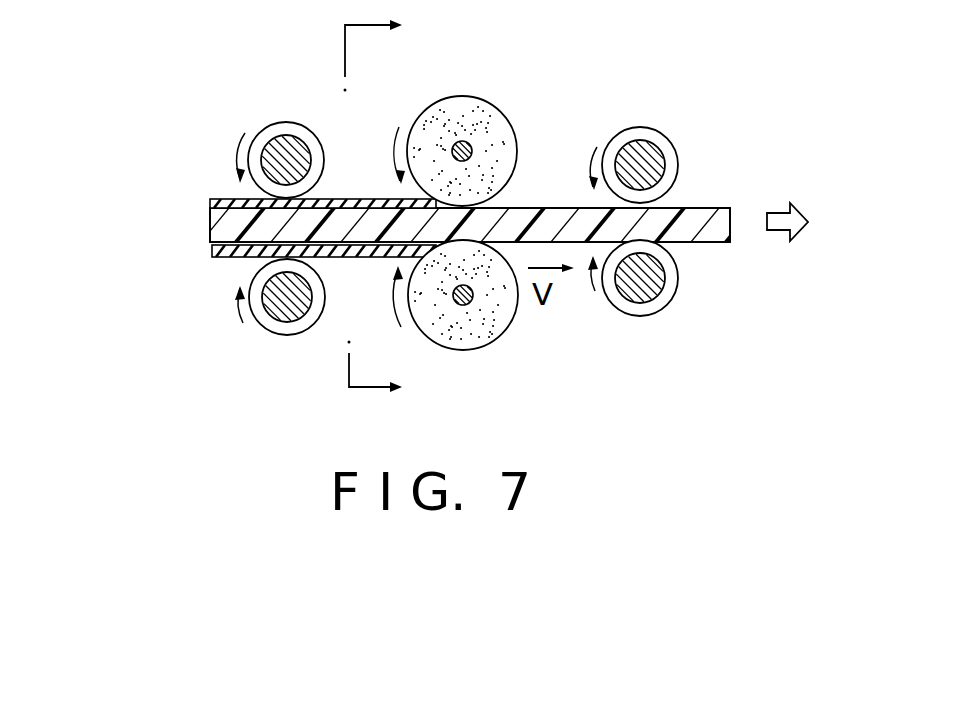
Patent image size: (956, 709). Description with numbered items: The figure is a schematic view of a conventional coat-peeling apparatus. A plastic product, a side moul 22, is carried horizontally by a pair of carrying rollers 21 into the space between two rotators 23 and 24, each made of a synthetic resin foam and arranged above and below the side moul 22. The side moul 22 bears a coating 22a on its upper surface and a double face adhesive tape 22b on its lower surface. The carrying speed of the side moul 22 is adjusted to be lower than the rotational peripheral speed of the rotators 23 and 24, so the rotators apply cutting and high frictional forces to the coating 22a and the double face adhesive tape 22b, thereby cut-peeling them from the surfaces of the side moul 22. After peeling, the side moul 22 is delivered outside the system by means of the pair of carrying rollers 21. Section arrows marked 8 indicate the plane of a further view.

The guide rollers 21 is at (288, 122).
The substrate strip 22 is at (224, 222).
The upper coating layer 22a is at (354, 199).
The lower coating layer 22b is at (226, 258).
The upper grinding wheel 23 is at (479, 101).
The lower grinding wheel 24 is at (482, 349).
The section line 8- 8 is at (391, 209).